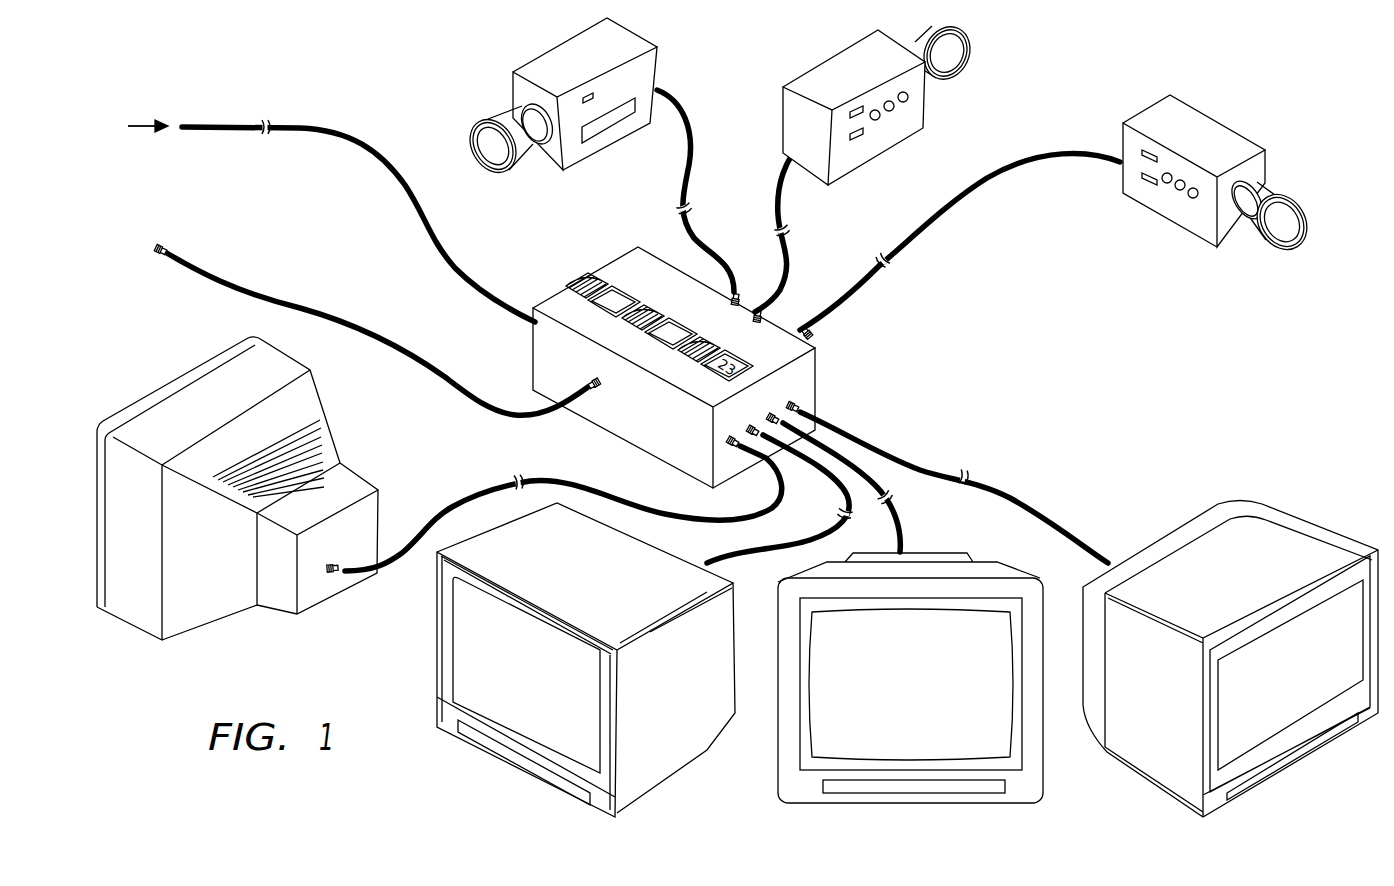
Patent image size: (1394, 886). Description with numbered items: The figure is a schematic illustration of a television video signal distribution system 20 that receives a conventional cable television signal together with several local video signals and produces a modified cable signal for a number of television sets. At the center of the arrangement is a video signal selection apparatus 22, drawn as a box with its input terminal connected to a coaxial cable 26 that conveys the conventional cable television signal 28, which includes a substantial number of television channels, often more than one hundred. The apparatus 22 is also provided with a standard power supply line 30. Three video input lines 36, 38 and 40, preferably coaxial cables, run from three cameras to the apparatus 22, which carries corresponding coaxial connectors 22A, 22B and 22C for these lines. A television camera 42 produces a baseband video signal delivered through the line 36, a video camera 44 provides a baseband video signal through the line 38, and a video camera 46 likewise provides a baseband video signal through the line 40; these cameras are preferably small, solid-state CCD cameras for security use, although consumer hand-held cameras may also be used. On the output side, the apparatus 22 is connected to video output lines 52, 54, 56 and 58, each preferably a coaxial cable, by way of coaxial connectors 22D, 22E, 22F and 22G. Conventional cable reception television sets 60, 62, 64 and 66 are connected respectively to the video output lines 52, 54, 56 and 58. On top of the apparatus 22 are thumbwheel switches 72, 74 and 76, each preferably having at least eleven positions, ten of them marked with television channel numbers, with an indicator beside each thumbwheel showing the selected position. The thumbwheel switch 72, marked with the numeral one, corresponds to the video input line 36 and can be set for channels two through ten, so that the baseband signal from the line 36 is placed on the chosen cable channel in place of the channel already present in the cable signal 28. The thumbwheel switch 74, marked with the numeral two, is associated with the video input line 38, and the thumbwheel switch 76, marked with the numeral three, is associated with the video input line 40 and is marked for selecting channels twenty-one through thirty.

The television video signal distribution system 20 is at (363, 29).
The video signal selection apparatus 22 is at (653, 450).
The coaxial connector 22A is at (730, 291).
The coaxial connector 22B is at (760, 313).
The coaxial connector 22C is at (812, 338).
The coaxial connector 22D is at (800, 406).
The coaxial connector 22E is at (786, 421).
The coaxial connector 22F is at (748, 426).
The coaxial connector 22G is at (733, 448).
The coaxial cable 26 is at (300, 127).
The cable television signal 28 is at (137, 125).
The power supply line 30 is at (315, 309).
The video input line 36 is at (682, 185).
The video input line 38 is at (774, 190).
The video input line 40 is at (1033, 152).
The television camera 42 is at (566, 52).
The video camera 44 is at (834, 63).
The video camera 46 is at (1212, 127).
The video output line 52 is at (1018, 490).
The video output line 54 is at (902, 525).
The video output line 56 is at (828, 528).
The video output line 58 is at (473, 493).
The television set 60 is at (1298, 686).
The television set 62 is at (926, 702).
The television set 64 is at (543, 682).
The television set 66 is at (221, 566).
The thumbwheel switch 72 is at (600, 283).
The thumbwheel switch 74 is at (615, 330).
The thumbwheel switch 76 is at (672, 363).